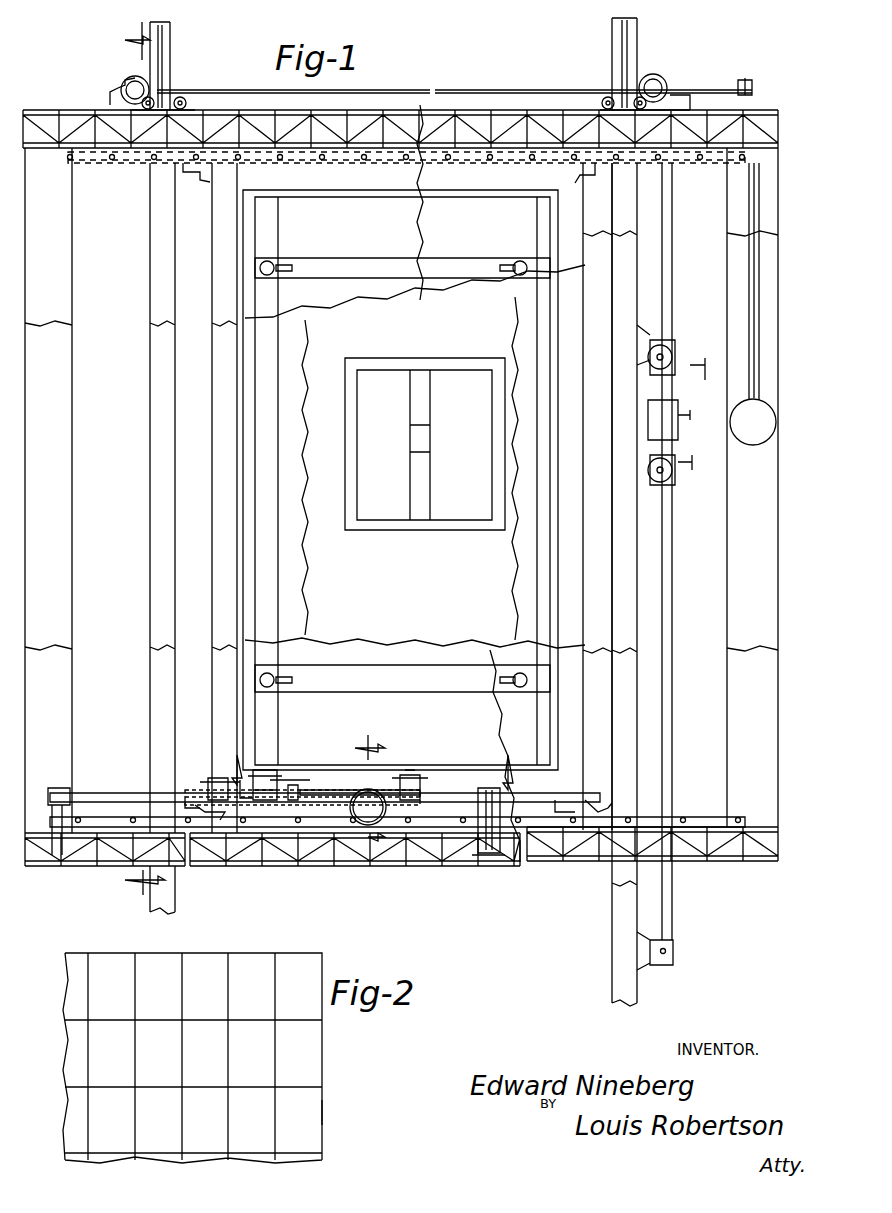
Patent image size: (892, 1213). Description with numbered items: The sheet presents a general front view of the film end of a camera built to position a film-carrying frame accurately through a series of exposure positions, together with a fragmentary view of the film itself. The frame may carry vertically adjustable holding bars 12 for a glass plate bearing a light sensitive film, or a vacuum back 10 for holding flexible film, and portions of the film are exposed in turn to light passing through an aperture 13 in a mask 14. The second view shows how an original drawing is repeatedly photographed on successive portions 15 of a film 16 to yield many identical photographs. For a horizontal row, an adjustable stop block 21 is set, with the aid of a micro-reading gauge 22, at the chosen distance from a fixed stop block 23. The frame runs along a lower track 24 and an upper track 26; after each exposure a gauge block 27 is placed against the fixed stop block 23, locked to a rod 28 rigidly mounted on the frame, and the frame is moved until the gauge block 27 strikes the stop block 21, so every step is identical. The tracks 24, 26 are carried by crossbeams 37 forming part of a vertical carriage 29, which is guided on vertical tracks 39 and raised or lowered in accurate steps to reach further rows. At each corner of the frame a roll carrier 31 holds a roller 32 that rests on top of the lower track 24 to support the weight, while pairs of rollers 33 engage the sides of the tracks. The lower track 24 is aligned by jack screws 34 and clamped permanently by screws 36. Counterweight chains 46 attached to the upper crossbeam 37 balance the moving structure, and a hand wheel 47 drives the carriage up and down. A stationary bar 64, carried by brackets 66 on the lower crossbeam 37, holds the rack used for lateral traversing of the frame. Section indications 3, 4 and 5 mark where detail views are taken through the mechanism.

In FIG. 1, the section line 3 is at (141, 461).
In FIG. 1, the section line 4 is at (370, 795).
In FIG. 1, the section line 5 is at (365, 768).
In FIG. 1, the vacuum back 10 is at (285, 449).
In FIG. 1, the holding bars 12 is at (60, 60).
In FIG. 1, the aperture 13 is at (428, 440).
In FIG. 1, the mask 14 is at (365, 385).
In FIG. 2, the portions of a film 15 is at (295, 948).
In FIG. 2, the film 16 is at (338, 1112).
In FIG. 1, the adjustable stop block 21 is at (296, 784).
In FIG. 1, the micro-reading gauge 22 is at (262, 772).
In FIG. 1, the fixed stop block 23 is at (406, 775).
In FIG. 1, the lower track 24 is at (300, 862).
In FIG. 1, the upper track 26 is at (300, 157).
In FIG. 1, the gauge block 27 is at (360, 790).
In FIG. 1, the rod 28 is at (330, 790).
In FIG. 1, the vertical carriage 29 is at (72, 694).
In FIG. 1, the roll carrier 31 is at (170, 900).
In FIG. 1, the roller 32 is at (212, 812).
In FIG. 1, the rollers 33 is at (175, 162).
In FIG. 1, the jack screws 34 is at (415, 866).
In FIG. 1, the screws 36 is at (410, 822).
In FIG. 1, the crossbeams 37 is at (85, 100).
In FIG. 1, the vertical tracks 39 is at (150, 376).
In FIG. 1, the counterweight chains 46 is at (170, 63).
In FIG. 1, the hand wheel 47 is at (776, 416).
In FIG. 1, the stationary bar 64 is at (210, 790).
In FIG. 1, the brackets 66 is at (70, 790).